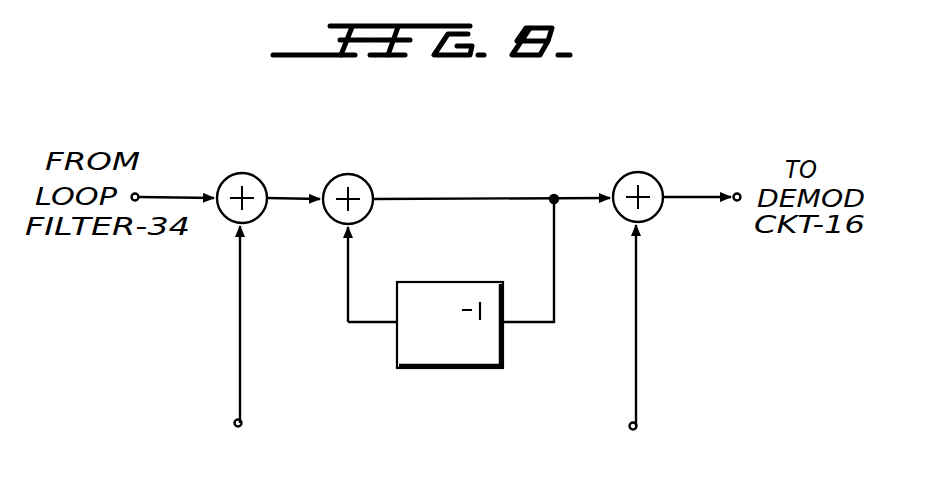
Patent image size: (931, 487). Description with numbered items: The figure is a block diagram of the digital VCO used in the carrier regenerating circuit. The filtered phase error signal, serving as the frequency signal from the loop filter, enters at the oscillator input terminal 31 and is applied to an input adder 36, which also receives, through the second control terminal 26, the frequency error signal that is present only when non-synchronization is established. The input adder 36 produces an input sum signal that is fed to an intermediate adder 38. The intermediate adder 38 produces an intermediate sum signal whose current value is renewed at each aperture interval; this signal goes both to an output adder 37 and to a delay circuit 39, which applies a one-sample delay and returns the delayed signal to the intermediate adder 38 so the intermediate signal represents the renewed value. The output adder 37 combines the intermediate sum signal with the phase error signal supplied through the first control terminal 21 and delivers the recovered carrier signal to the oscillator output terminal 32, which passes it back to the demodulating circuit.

The oscillator input terminal 31 is at (139, 194).
The input adder 36 is at (254, 176).
The intermediate adder 38 is at (377, 153).
The output adder 37 is at (642, 171).
The oscillator output terminal 32 is at (736, 192).
The delay circuit 39 is at (437, 368).
The second control terminal 26 is at (242, 423).
The first control terminal 21 is at (637, 426).